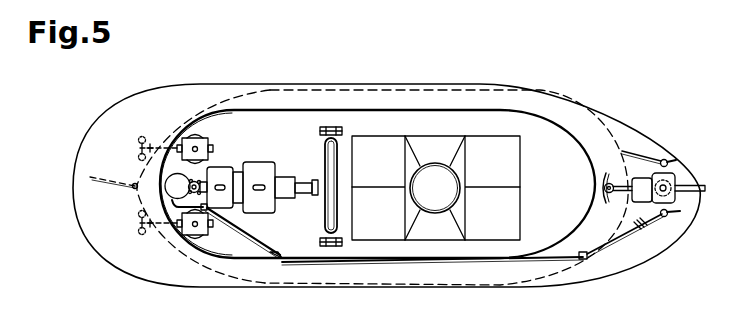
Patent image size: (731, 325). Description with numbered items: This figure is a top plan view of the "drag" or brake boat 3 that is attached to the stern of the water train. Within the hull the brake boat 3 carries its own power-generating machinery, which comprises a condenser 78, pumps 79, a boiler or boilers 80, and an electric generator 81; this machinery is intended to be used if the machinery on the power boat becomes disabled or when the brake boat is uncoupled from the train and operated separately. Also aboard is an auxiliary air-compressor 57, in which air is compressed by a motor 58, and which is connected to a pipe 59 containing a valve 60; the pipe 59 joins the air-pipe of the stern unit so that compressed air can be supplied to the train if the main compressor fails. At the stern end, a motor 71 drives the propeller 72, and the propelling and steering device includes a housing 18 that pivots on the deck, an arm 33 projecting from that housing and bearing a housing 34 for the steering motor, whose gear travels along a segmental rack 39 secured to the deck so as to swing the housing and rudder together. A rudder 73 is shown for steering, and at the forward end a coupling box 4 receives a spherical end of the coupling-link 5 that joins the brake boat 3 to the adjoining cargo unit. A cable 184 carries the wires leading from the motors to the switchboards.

The brake boat 3 is at (386, 185).
The box 4 is at (670, 174).
The coupling-link 5 is at (686, 184).
The housing 18 is at (632, 196).
The arm 33 is at (618, 179).
The housing 34 is at (606, 190).
The segmental rack 39 is at (605, 177).
The auxiliary air-compressor 57 is at (166, 181).
The motor 58 is at (200, 178).
The pipe 59 is at (423, 262).
The valve 60 is at (642, 227).
The motor 71 is at (205, 143).
The propeller 72 is at (141, 137).
The rudder 73 is at (95, 178).
The condenser 78 is at (327, 198).
The pumps 79 is at (343, 131).
The boiler 80 is at (436, 188).
The electric generator 81 is at (260, 170).
The cable 184 is at (638, 152).